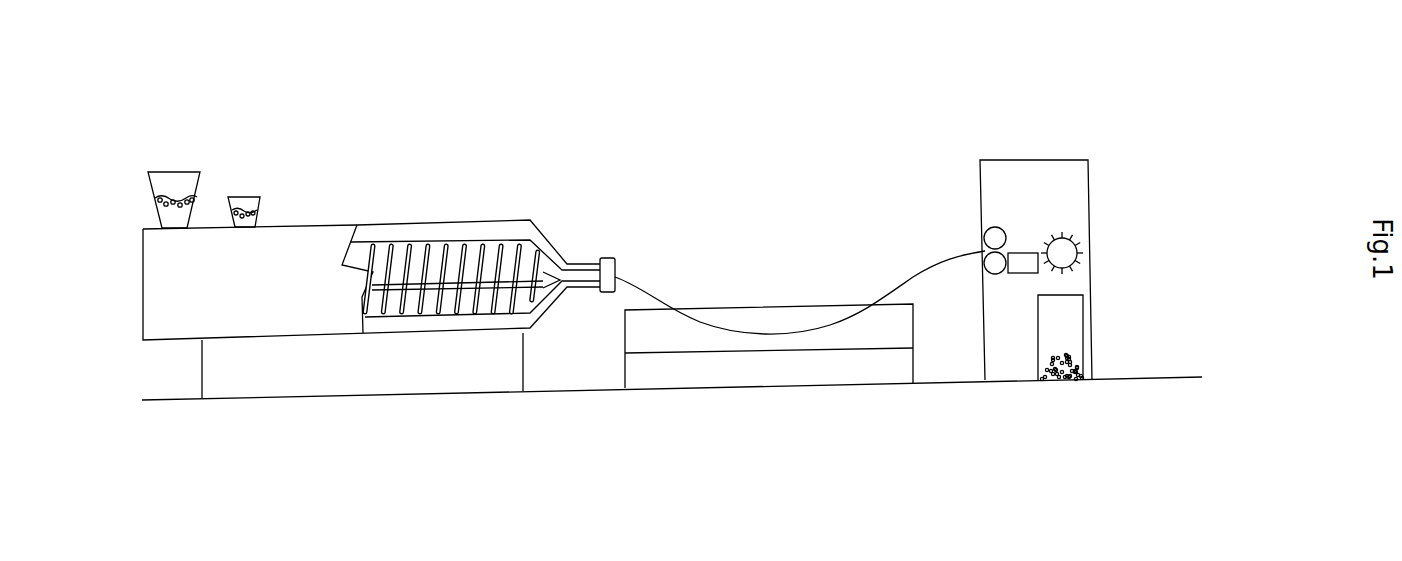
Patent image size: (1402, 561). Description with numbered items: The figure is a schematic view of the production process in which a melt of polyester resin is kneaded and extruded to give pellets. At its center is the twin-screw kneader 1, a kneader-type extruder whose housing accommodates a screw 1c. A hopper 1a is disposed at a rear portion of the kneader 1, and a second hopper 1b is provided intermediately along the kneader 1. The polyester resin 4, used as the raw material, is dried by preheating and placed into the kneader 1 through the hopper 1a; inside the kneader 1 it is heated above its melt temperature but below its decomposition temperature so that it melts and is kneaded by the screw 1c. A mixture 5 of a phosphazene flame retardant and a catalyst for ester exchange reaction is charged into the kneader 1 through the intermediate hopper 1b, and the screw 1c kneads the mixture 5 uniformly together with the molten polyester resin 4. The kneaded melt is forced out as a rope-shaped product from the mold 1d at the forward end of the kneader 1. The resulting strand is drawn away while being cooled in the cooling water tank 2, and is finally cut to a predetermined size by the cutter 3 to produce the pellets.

The twin-screw kneader 1 is at (463, 205).
The hopper 1a is at (174, 138).
The hopper 1b is at (300, 136).
The screw 1c is at (403, 305).
The mold 1d is at (623, 257).
The water tank 2 is at (755, 345).
The cutter 3 is at (1030, 150).
The polyester resin 4 is at (182, 182).
The mixture 5 is at (248, 197).